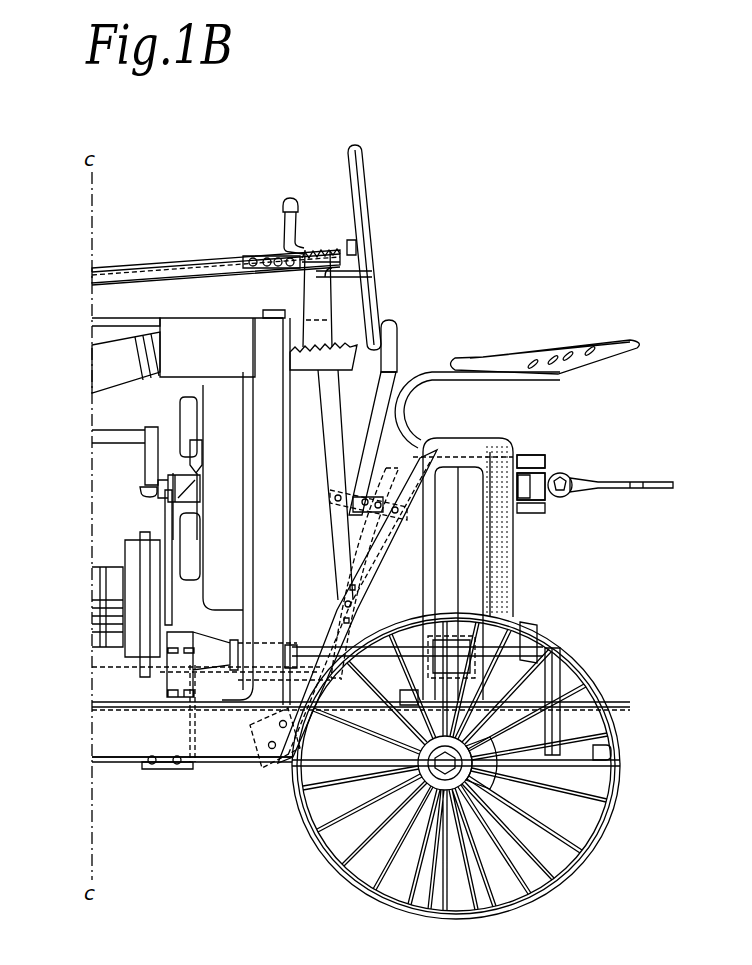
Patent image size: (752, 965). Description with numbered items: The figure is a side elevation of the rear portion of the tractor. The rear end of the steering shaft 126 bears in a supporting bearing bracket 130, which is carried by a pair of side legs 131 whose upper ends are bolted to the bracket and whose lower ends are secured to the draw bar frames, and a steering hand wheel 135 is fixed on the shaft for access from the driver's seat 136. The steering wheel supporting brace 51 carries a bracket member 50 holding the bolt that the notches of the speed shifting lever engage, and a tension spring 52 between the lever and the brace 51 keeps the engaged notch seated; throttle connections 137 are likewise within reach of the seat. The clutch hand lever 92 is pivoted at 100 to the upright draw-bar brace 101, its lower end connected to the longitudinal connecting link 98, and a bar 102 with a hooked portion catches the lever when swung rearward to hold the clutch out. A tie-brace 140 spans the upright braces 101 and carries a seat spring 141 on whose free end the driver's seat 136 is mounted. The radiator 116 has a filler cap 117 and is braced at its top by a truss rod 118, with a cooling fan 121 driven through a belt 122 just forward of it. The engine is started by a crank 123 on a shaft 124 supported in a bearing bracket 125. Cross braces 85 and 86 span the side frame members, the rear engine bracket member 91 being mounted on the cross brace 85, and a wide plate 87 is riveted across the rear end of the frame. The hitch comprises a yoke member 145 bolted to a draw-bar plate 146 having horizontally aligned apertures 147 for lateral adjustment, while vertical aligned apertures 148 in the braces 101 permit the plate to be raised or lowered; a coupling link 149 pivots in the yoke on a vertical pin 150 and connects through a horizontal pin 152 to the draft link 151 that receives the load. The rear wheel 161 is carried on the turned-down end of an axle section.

The steering shaft 126 is at (108, 268).
The draw-bar plate 146 is at (168, 240).
The horizontally aligned apertures 147 is at (283, 207).
The tension spring 52 is at (320, 250).
The vertical aligned apertures 148 is at (281, 268).
The bracket member 50 is at (283, 272).
The coupling link 149 is at (294, 267).
The supporting bearing bracket 130 is at (338, 248).
The steering hand wheel 135 is at (363, 258).
The steering wheel supporting brackets or brace 51 is at (352, 274).
The filler cap 117 is at (262, 313).
The truss rod 118 is at (110, 327).
The hand lever 92 is at (397, 324).
The driver's seat 136 is at (557, 360).
The throttle connections 137 is at (300, 362).
The seat spring 141 is at (432, 380).
The tie-brace 140 is at (452, 466).
The vertical pin 150 is at (530, 460).
The yoke member 145 is at (538, 474).
The horizontal pin 152 is at (563, 498).
The draft link 151 is at (595, 480).
The belt 122 is at (142, 486).
The side legs or braces 131 is at (330, 457).
The radiator 116 is at (270, 505).
The cooling fan 121 is at (187, 527).
The bar 102 is at (352, 512).
The upright draw-bar brace 101 is at (378, 557).
The pivot 100 is at (347, 606).
The cross brace 85 is at (195, 729).
The bearing bracket 125 is at (462, 648).
The starting crank 123 is at (560, 692).
The shaft 124 is at (550, 629).
The plate 87 is at (403, 705).
The cross brace 86 is at (495, 758).
The longitudinal connecting link 98 is at (94, 667).
The bracket member 91 is at (168, 668).
The wheel 161 is at (363, 891).